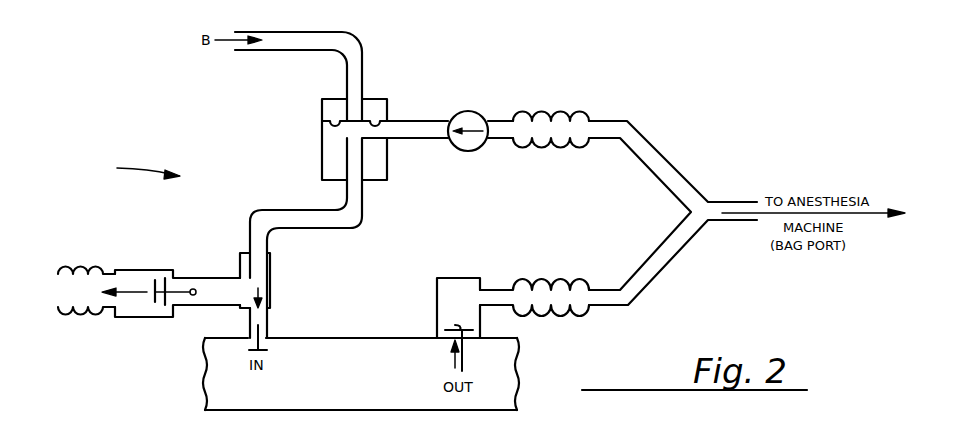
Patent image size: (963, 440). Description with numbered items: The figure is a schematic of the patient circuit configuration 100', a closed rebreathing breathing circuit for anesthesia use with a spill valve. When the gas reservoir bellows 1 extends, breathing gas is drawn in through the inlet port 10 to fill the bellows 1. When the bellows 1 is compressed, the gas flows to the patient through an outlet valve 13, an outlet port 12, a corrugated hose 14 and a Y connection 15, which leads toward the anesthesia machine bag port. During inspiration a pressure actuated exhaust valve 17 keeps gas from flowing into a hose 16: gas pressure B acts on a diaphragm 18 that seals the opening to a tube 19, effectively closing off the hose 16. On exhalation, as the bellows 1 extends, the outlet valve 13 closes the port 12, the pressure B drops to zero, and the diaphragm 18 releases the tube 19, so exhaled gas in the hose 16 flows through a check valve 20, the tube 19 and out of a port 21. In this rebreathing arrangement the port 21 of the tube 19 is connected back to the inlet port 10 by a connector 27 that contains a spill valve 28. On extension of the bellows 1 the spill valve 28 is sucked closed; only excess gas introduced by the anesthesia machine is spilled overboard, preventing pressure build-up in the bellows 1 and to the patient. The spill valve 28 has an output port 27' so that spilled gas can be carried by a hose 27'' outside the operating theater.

The gas reservoir bellows 1 is at (214, 380).
The inlet port 10 is at (266, 323).
The outlet port 12 is at (437, 295).
The outlet valve 13 is at (455, 323).
The corrugated hose 14 is at (557, 288).
The Y connection 15 is at (658, 154).
The hose 16 is at (573, 111).
The pressure actuated exhaust valve 17 is at (380, 99).
The diaphragm 18 is at (345, 119).
The tube 19 is at (346, 147).
The check valve 20 is at (470, 111).
The port 21 is at (352, 209).
The connector 27 is at (280, 278).
The output port 27' is at (170, 263).
The hose 27'' is at (77, 269).
The spill valve 28 is at (186, 290).
The patient circuit configuration 100' is at (130, 168).